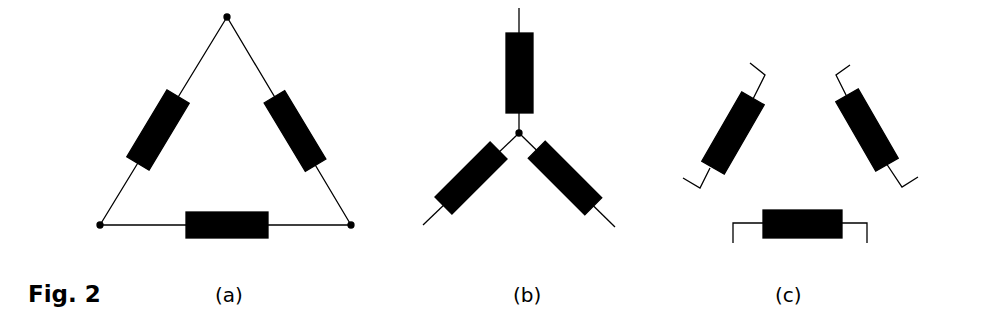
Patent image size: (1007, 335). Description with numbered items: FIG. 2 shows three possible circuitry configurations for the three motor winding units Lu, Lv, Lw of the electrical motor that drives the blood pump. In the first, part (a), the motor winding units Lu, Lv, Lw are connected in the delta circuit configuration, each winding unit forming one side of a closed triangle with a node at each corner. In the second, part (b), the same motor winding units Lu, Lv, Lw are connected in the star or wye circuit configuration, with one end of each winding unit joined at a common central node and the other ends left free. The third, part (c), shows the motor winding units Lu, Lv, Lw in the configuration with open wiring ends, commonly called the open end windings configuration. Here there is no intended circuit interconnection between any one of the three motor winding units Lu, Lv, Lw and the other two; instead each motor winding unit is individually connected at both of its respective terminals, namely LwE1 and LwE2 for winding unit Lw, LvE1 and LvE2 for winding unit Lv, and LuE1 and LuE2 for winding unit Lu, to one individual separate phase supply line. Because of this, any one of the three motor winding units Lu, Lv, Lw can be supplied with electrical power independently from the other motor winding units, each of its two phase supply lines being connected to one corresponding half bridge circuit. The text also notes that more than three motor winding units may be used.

The motor winding unit Lu is at (585, 102).
The motor winding unit Lv is at (514, 204).
The motor winding unit Lw is at (438, 152).
The motor winding unit terminal LuE1 is at (920, 171).
The motor winding unit terminal LuE2 is at (861, 70).
The motor winding unit terminal LvE1 is at (882, 239).
The motor winding unit terminal LvE2 is at (725, 238).
The motor winding unit terminal LwE1 is at (737, 71).
The motor winding unit terminal LwE2 is at (677, 172).